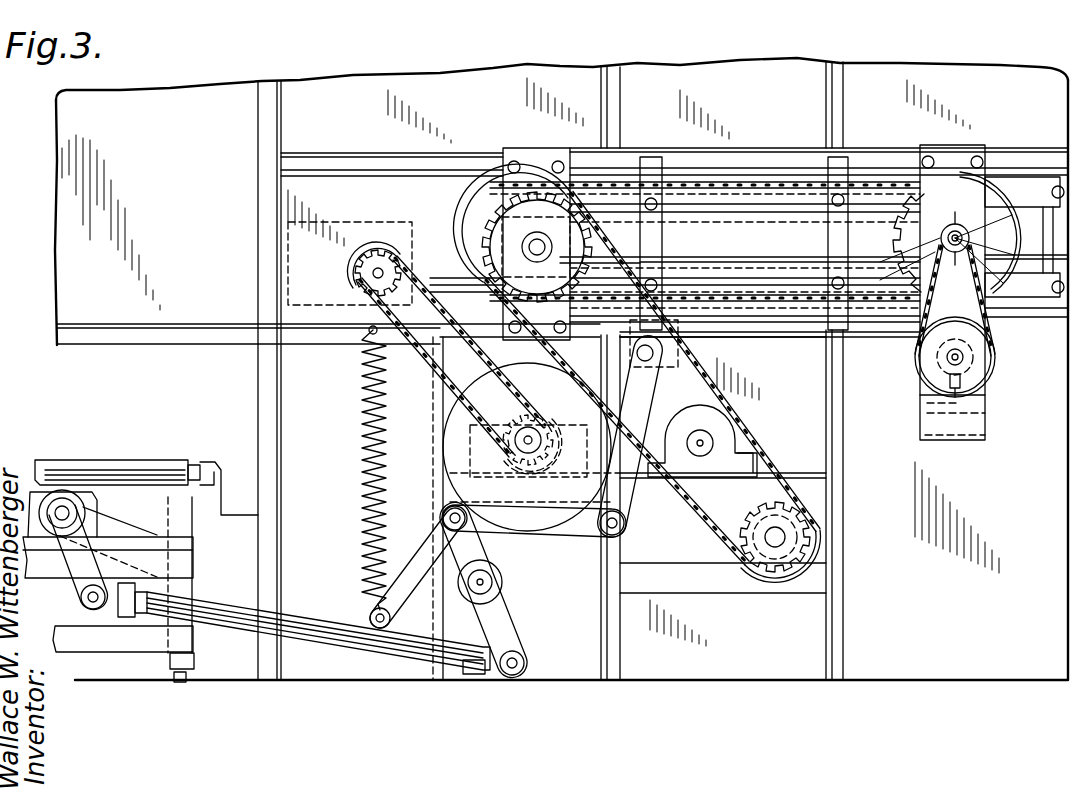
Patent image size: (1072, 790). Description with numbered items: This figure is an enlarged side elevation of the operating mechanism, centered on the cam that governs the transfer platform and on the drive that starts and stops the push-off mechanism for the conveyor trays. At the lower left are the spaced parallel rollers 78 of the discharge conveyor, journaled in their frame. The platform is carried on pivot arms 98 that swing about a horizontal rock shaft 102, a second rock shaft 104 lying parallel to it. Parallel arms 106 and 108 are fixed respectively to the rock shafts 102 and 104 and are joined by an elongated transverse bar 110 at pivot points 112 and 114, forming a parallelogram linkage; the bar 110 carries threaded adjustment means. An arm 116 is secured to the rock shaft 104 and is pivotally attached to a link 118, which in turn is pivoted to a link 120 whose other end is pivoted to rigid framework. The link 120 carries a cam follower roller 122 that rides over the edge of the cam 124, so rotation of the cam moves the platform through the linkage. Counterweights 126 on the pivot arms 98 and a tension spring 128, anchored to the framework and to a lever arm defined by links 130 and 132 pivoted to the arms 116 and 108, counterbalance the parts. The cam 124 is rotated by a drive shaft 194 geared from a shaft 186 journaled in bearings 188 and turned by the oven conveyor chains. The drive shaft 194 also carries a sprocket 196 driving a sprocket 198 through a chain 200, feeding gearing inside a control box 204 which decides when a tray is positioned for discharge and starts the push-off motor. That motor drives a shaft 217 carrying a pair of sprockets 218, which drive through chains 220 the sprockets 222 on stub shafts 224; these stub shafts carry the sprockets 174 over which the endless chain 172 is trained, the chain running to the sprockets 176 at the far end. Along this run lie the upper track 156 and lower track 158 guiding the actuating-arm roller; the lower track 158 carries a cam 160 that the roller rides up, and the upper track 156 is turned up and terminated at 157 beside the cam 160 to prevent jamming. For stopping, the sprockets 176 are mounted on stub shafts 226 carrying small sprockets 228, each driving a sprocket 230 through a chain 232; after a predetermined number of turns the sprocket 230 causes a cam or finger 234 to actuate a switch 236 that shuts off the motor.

The rollers 78 is at (135, 460).
The pivot arms 98 is at (43, 492).
The rock shaft 102 is at (65, 508).
The rock shaft 104 is at (500, 582).
The parallel arm 106 is at (72, 565).
The parallel arm 108 is at (503, 630).
The elongated transverse bar 110 is at (300, 628).
The pivot point 112 is at (90, 606).
The pivot point 114 is at (524, 656).
The arm 116 is at (482, 538).
The link 118 is at (556, 527).
The link 120 is at (647, 400).
The cam follower roller 122 is at (640, 418).
The cam 124 is at (538, 365).
The counterweights 126 is at (197, 553).
The tension spring 128 is at (360, 477).
The link 130 is at (413, 560).
The link 132 is at (433, 636).
The upper track 156 is at (722, 262).
The turned-up end of upper track 157 is at (813, 273).
The lower track 158 is at (748, 295).
The cam 160 is at (884, 302).
The endless chain 172 is at (745, 183).
The sprocket 174 is at (573, 262).
The sprocket 176 is at (905, 238).
The shaft 186 is at (723, 410).
The bearings 188 is at (745, 412).
The drive shaft 194 is at (535, 438).
The sprocket 196 is at (530, 438).
The sprocket 198 is at (378, 260).
The chain 200 is at (412, 272).
The control box 204 is at (290, 250).
The shaft 217 is at (787, 534).
The sprockets 218 is at (805, 505).
The chains 220 is at (758, 442).
The sprockets 222 is at (577, 247).
The stub shafts 224 is at (530, 245).
The stub shafts 226 is at (995, 232).
The small sprockets 228 is at (992, 281).
The sprocket 230 is at (985, 362).
The chain 232 is at (990, 317).
The cam or finger 234 is at (990, 394).
The switch 236 is at (916, 425).